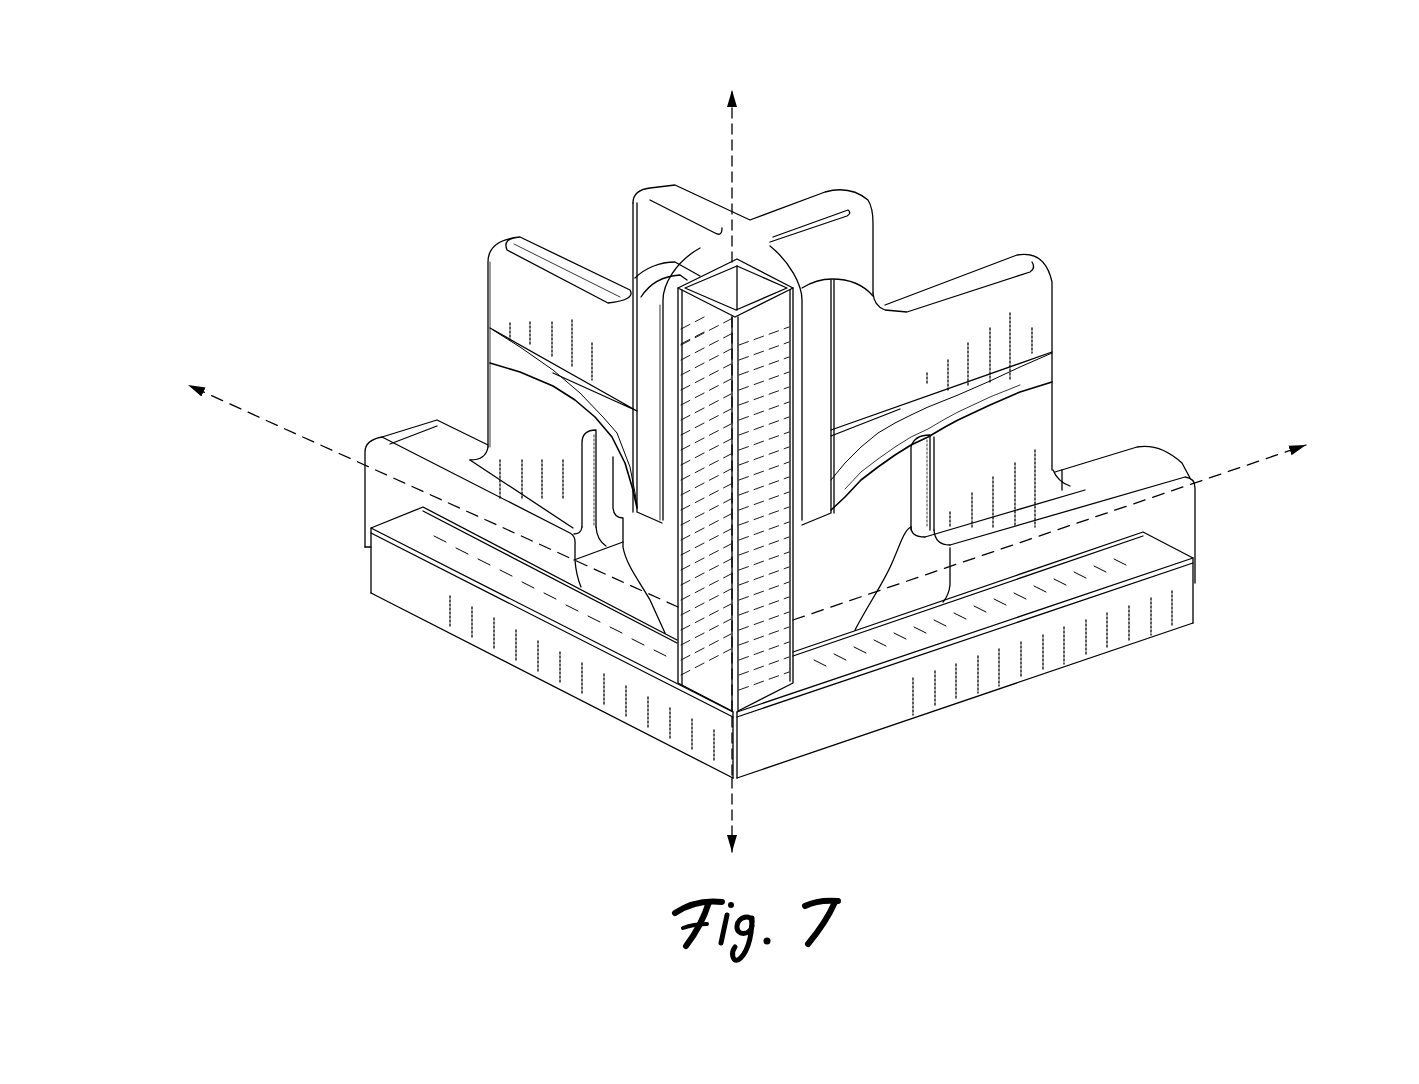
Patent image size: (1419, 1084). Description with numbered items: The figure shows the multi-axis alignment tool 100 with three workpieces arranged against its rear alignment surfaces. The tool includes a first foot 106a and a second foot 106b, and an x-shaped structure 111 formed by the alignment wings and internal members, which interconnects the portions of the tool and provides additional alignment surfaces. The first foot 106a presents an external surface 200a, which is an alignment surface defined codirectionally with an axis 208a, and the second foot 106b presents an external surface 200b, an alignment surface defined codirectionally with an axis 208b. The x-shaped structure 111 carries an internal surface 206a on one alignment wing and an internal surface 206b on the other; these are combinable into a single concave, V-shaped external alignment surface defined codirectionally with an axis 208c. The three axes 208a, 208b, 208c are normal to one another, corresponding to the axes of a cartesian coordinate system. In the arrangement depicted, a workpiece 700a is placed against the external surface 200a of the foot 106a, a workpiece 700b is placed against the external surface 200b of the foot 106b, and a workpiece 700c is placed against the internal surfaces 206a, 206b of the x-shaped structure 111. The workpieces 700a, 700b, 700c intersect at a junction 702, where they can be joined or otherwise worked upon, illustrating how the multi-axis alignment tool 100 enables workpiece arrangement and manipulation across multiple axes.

The multi-axis alignment tool 100 is at (579, 105).
The x-shaped structure 111 is at (813, 158).
The first foot 106a is at (1137, 463).
The second foot 106b is at (422, 433).
The external surface of the first foot 200a is at (1177, 508).
The external surface of the second foot 200b is at (383, 490).
The internal surface of the first alignment wing 206a is at (670, 318).
The internal surface of the second alignment wing 206b is at (803, 313).
The axis 208a is at (1316, 435).
The axis 208b is at (181, 375).
The axis 208c is at (738, 92).
The workpiece 700a is at (1077, 648).
The workpiece 700b is at (441, 612).
The workpiece 700c is at (788, 597).
The junction 702 is at (712, 785).